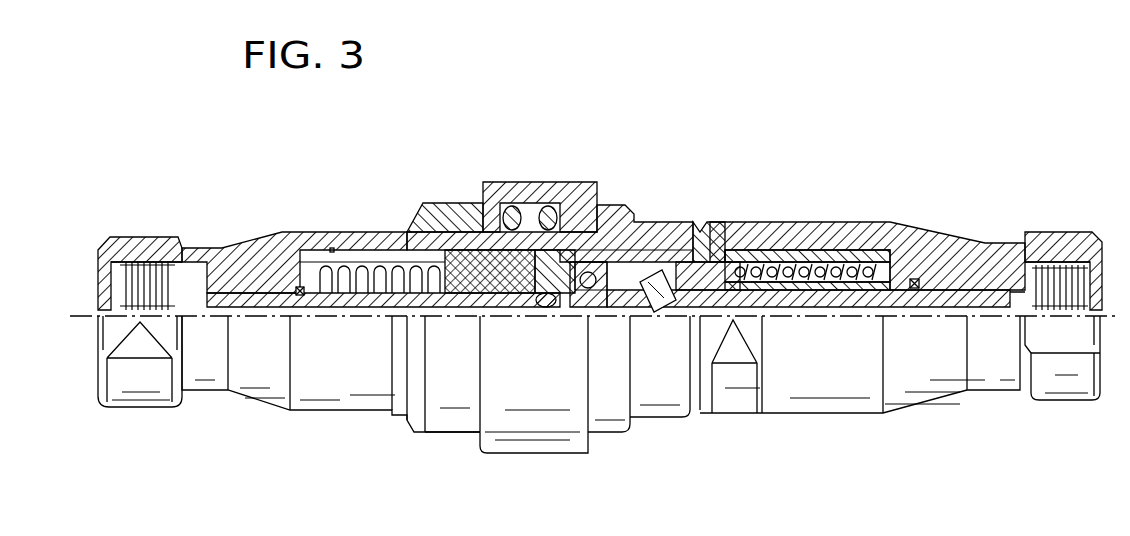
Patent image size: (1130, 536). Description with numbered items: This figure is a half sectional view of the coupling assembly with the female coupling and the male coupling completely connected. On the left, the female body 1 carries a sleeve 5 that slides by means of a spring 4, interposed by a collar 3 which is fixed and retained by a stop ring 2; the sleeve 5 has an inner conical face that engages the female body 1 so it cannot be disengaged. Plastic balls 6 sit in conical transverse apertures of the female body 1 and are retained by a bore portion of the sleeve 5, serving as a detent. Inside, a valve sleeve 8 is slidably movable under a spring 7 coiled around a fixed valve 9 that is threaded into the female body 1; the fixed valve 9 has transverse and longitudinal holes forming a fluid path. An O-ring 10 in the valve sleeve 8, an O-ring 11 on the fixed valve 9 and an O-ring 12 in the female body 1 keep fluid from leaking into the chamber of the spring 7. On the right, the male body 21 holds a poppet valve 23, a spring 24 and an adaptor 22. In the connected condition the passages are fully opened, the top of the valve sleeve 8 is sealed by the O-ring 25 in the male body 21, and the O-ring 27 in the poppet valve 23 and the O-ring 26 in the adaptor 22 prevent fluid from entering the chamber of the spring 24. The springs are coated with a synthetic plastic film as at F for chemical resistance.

The female body 1 is at (306, 240).
The stop ring 2 is at (396, 232).
The collar 3 is at (450, 204).
The spring 4 is at (518, 210).
The sleeve 5 is at (564, 204).
The plastic balls 6 is at (600, 222).
The spring 7 is at (350, 268).
The valve sleeve 8 is at (512, 300).
The fixed valve 9 is at (630, 300).
The O-ring 10 is at (478, 302).
The O-ring 11 is at (583, 290).
The O-ring 12 is at (302, 296).
The male body 21 is at (761, 224).
The adaptor 22 is at (993, 242).
The poppet valve 23 is at (648, 305).
The spring 24 is at (823, 270).
The O-ring 25 is at (528, 306).
The O-ring 26 is at (915, 280).
The O-ring 27 is at (722, 226).
The synthetic plastic film F is at (330, 246).